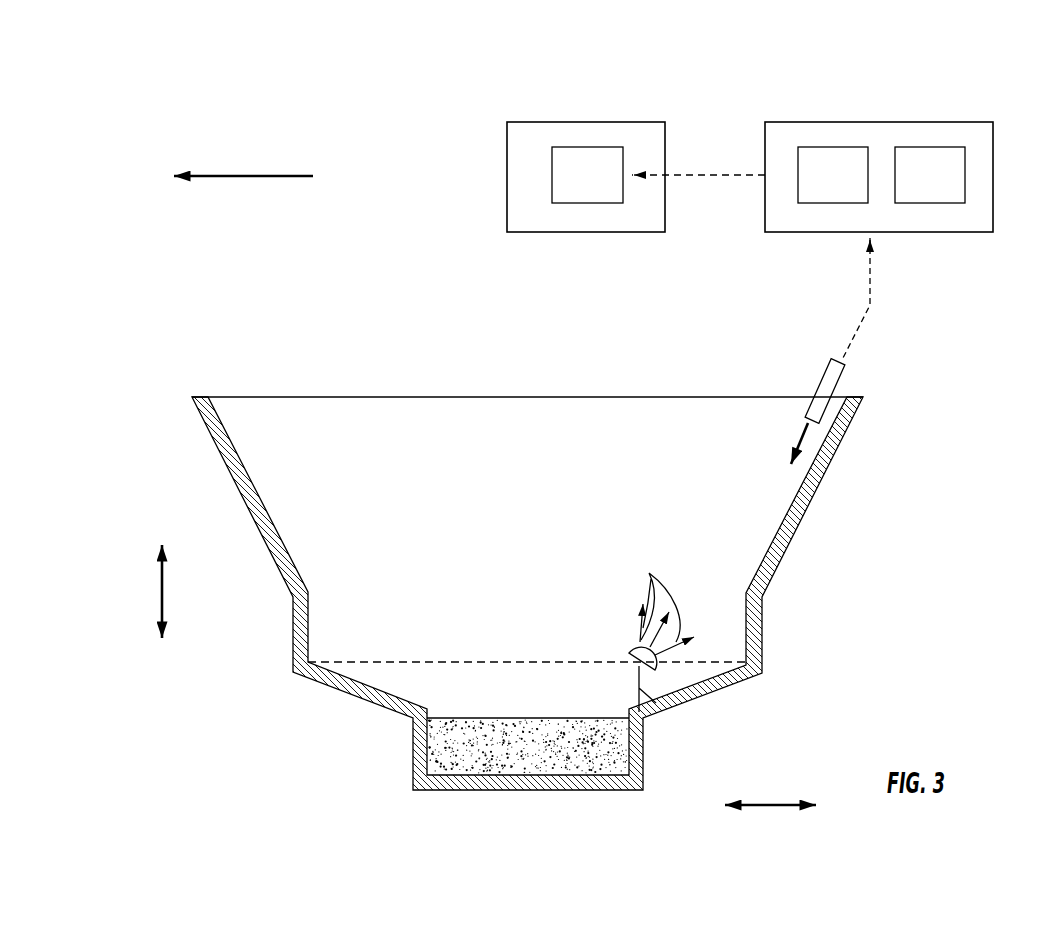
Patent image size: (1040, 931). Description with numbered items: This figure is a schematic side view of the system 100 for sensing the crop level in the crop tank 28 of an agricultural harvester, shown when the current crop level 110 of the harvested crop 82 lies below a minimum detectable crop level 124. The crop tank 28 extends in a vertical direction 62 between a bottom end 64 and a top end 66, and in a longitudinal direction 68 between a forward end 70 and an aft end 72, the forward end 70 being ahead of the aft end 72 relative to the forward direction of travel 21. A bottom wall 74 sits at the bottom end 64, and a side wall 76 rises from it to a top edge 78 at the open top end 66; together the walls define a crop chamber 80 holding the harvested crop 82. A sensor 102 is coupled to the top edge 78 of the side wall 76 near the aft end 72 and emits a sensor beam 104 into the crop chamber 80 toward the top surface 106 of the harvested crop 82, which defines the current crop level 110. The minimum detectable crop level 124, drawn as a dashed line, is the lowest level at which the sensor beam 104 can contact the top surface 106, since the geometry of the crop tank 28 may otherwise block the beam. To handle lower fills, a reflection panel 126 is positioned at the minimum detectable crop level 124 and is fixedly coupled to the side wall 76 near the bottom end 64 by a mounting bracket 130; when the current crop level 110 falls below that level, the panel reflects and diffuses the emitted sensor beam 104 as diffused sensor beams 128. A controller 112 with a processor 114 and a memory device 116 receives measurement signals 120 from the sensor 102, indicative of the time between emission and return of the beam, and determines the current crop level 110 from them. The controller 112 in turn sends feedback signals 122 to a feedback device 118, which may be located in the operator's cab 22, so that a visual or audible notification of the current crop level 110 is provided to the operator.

The system 100 is at (92, 170).
The forward direction of travel 21 is at (237, 175).
The operator's cab 22 is at (576, 164).
The crop tank 28 is at (146, 411).
The vertical direction arrow 62 is at (164, 598).
The bottom end 64 is at (437, 804).
The top end 66 is at (554, 363).
The longitudinal direction arrow 68 is at (770, 804).
The forward end 70 is at (293, 741).
The aft end 72 is at (799, 686).
The bottom wall 74 is at (578, 791).
The side wall 76 is at (288, 580).
The top edge 78 is at (372, 396).
The crop chamber 80 is at (620, 434).
The harvested crop 82 is at (475, 756).
The sensor 102 is at (825, 380).
The sensor beam 104 is at (800, 442).
The top surface 106 is at (533, 717).
The current crop level 110 is at (460, 717).
The controller 112 is at (894, 164).
The processor 114 is at (819, 186).
The memory device 116 is at (916, 186).
The feedback device 118 is at (573, 186).
The measurement signals 120 is at (870, 280).
The feedback signals 122 is at (714, 175).
The minimum detectable crop level 124 is at (405, 660).
The reflection panel 126 is at (630, 650).
The diffused sensor beams 128 is at (657, 603).
The mounting bracket 130 is at (639, 688).